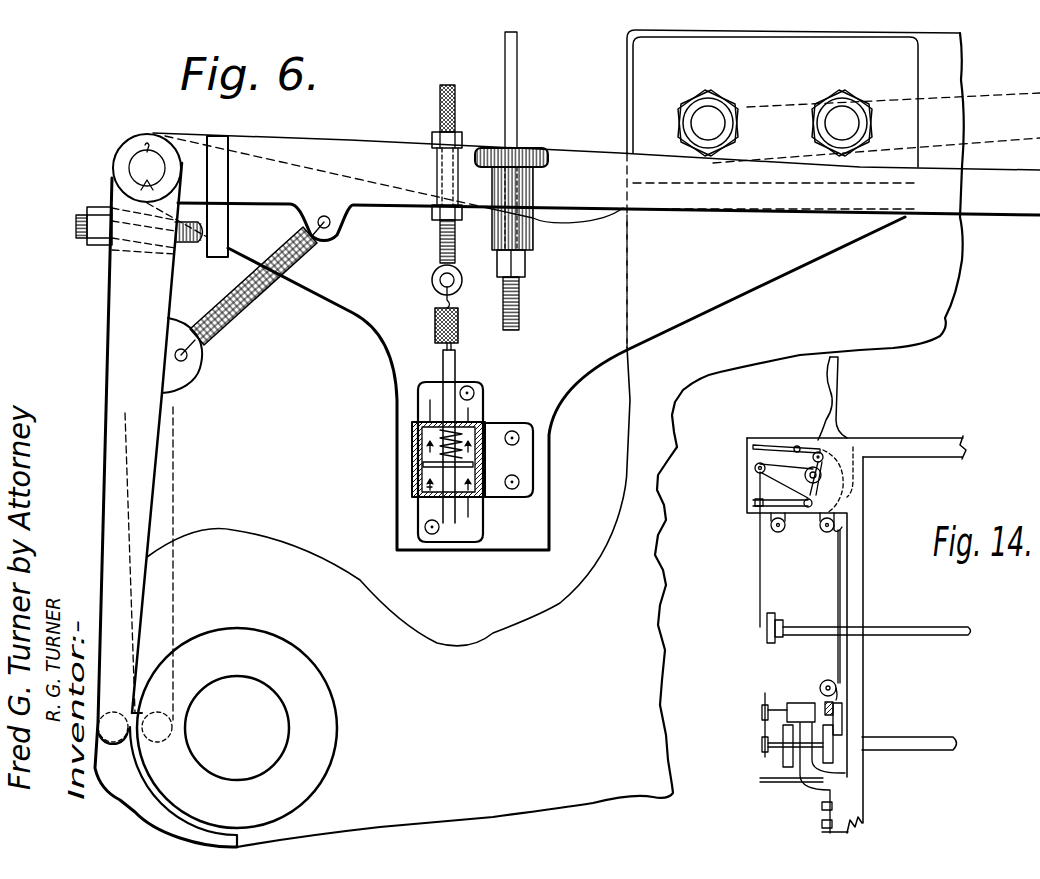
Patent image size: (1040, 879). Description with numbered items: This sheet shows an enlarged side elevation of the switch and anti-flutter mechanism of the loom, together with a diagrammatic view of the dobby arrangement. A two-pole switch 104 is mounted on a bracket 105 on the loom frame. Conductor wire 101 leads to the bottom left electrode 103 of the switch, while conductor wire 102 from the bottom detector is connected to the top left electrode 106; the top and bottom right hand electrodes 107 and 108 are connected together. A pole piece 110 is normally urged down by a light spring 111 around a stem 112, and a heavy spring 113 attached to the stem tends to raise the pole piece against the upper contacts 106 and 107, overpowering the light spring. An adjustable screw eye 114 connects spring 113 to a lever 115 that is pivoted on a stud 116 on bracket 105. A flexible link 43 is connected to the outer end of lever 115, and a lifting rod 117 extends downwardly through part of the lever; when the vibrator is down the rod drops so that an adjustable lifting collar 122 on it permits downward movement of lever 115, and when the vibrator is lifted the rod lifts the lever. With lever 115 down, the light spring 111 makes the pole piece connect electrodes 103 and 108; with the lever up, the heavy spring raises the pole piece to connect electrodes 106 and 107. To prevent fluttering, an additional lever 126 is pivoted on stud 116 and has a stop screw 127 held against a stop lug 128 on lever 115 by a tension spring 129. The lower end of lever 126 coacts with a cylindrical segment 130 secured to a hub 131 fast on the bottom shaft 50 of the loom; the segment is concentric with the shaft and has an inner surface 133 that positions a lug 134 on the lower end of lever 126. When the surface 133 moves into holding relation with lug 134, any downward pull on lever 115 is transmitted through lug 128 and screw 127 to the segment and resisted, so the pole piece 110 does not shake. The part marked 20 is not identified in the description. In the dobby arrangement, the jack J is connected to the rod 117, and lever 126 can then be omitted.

In FIG. 6, the frame 20 is at (595, 580).
In FIG. 6, the flexible link 43 is at (833, 188).
In FIG. 6, the bottom shaft 50 is at (278, 726).
In FIG. 6, the conductor wire 101 is at (430, 504).
In FIG. 6, the conductor wire 102 is at (430, 400).
In FIG. 6, the bottom left electrode 103 is at (427, 487).
In FIG. 6, the two-pole switch 104 is at (427, 470).
In FIG. 6, the bracket 105 is at (728, 300).
In FIG. 6, the top left electrode 106 is at (430, 437).
In FIG. 6, the top right hand electrode 107 is at (468, 408).
In FIG. 6, the bottom right hand electrode 108 is at (468, 517).
In FIG. 6, the pole piece 110 is at (423, 465).
In FIG. 6, the light spring 111 is at (457, 453).
In FIG. 6, the stem 112 is at (456, 366).
In FIG. 6, the heavy spring 113 is at (436, 320).
In FIG. 6, the adjustable screw eye 114 is at (440, 237).
In FIG. 6, the lever 115 is at (365, 158).
In FIG. 6, the stud 116 is at (147, 168).
In FIG. 6, the lifting rod 117 is at (512, 104).
In FIG. 14, the lifting rod 117 is at (840, 570).
In FIG. 6, the adjustable lifting collar 122 is at (530, 236).
In FIG. 6, the additional lever 126 is at (120, 358).
In FIG. 6, the stop screw 127 is at (77, 219).
In FIG. 6, the stop lug 128 is at (214, 221).
In FIG. 6, the tension spring 129 is at (248, 311).
In FIG. 6, the cylindrical segment 130 is at (148, 779).
In FIG. 6, the hub 131 is at (293, 657).
In FIG. 6, the inner surface 133 is at (177, 803).
In FIG. 6, the lug 134 is at (114, 740).
In FIG. 14, the jack J is at (835, 373).